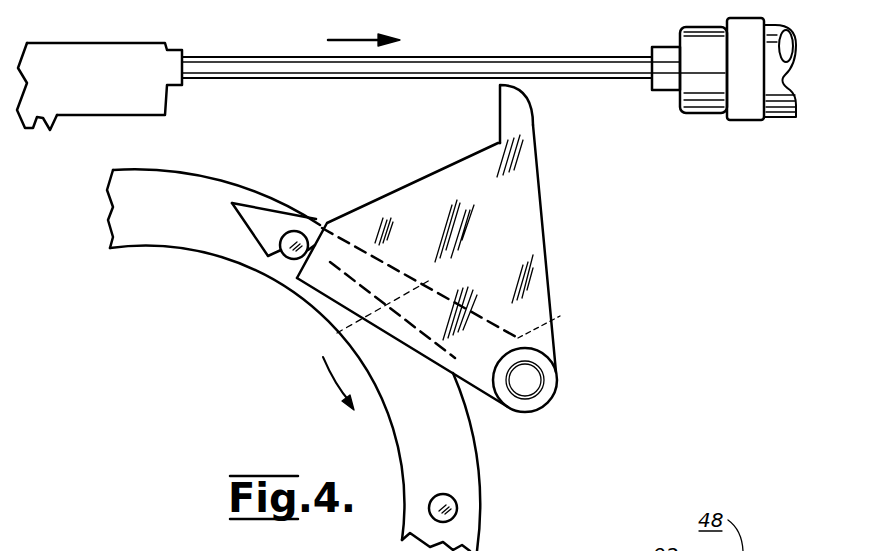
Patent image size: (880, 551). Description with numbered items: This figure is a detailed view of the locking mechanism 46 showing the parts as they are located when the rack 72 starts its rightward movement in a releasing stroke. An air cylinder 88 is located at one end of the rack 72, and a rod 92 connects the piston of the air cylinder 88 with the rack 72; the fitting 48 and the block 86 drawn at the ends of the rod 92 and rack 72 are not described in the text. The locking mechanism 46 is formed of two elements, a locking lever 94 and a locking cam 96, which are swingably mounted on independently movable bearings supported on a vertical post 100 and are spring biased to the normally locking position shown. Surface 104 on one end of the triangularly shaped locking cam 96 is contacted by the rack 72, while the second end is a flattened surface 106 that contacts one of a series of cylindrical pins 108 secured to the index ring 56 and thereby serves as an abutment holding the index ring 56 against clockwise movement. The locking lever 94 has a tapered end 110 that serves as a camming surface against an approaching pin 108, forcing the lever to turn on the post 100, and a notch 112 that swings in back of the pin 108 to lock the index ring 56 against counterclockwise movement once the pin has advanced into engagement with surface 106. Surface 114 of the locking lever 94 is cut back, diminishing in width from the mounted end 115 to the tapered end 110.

The locking mechanism 46 is at (548, 402).
The collar 48 is at (747, 110).
The index ring 56 is at (473, 470).
The rack 72 is at (55, 128).
The slide block 86 is at (163, 115).
The air cylinder 88 is at (689, 114).
The rod 92 is at (533, 62).
The locking lever 94 is at (285, 218).
The locking cam 96 is at (535, 208).
The vertical post 100 is at (540, 378).
The surface 104 is at (500, 108).
The flattened surface 106 is at (293, 268).
The pins 108 is at (288, 256).
The tapered end 110 is at (238, 226).
The notch 112 is at (263, 253).
The surface 114 is at (337, 333).
The mounted end 115 is at (510, 402).